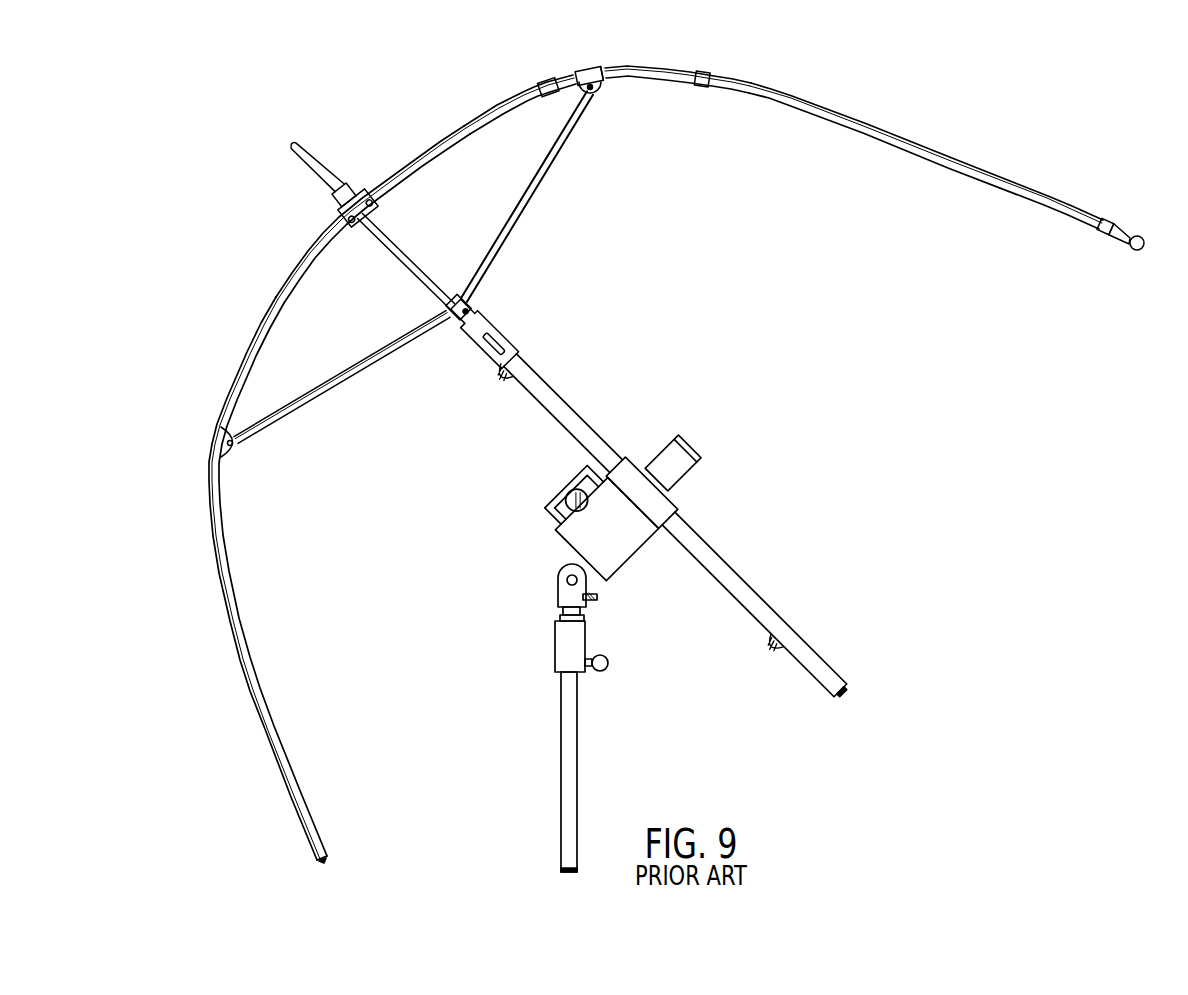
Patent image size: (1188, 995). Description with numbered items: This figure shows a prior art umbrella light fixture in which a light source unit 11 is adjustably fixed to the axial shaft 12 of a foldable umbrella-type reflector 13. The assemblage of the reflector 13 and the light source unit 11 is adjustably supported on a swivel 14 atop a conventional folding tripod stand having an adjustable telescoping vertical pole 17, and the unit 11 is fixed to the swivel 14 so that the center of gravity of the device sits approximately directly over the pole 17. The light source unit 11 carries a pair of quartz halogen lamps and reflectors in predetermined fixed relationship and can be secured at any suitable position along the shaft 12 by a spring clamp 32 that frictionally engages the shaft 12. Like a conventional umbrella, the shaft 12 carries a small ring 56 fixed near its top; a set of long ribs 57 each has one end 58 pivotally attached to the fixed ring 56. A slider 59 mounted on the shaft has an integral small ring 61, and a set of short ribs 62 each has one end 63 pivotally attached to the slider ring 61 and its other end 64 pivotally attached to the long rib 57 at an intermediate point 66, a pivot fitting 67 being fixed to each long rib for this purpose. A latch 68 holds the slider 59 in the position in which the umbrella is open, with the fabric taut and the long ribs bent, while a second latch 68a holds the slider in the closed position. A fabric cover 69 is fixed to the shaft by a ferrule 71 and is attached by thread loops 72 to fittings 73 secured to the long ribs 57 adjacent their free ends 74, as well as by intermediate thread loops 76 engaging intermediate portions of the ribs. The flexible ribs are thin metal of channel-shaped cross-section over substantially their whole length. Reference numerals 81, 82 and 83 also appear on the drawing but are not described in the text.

The light source unit 11 is at (566, 540).
The axial shaft 12 is at (717, 567).
The umbrella-type reflector 13 is at (228, 545).
The swivel 14 is at (557, 592).
The telescoping vertical pole 17 is at (568, 738).
The spring clamp 32 is at (672, 490).
The small ring 56 is at (373, 205).
The long ribs 57 is at (507, 108).
The end of long rib 58 is at (383, 193).
The slider 59 is at (490, 318).
The small ring of slider 61 is at (445, 309).
The short ribs 62 is at (548, 172).
The end of short rib 63 is at (470, 297).
The other end of short rib 64 is at (591, 91).
The intermediate point 66 is at (590, 72).
The pivot fitting 67 is at (612, 80).
The latch 68 is at (503, 378).
The second latch 68a is at (779, 648).
The fabric cover 69 is at (790, 99).
The ferrule 71 is at (347, 187).
The thread loops 72 is at (1105, 234).
The fittings 73 is at (1121, 229).
The free ends of long ribs 74 is at (1143, 238).
The intermediate thread loops 76 is at (703, 91).
The arc segment 81 is at (433, 148).
The arc sleeve 82 is at (552, 83).
The arc segment 83 is at (735, 84).